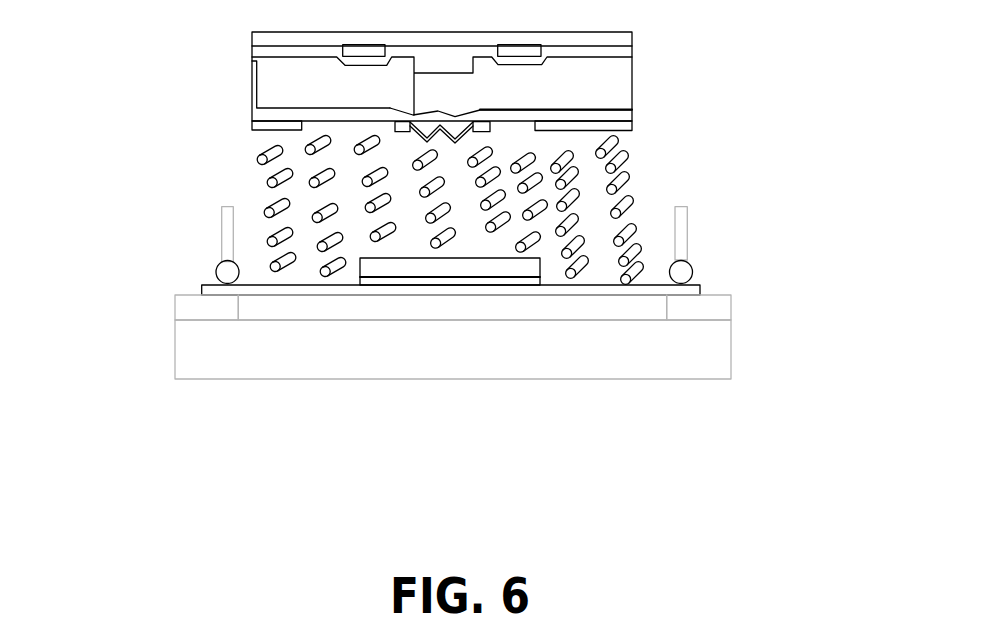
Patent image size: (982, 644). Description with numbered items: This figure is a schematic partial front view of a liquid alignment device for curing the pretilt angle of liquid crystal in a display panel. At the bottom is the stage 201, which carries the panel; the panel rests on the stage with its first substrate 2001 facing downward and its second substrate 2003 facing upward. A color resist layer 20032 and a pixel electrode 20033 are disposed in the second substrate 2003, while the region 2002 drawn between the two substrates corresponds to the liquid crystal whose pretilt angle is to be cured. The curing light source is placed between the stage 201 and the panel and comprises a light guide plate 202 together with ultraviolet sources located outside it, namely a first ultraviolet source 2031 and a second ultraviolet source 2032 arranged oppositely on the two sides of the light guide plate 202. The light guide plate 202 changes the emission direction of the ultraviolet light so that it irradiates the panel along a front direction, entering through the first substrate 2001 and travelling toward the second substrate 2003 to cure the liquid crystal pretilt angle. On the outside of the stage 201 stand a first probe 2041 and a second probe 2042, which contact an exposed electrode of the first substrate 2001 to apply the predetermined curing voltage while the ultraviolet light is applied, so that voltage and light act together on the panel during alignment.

The second substrate 2003 is at (603, 78).
The color resist layer 20032 is at (275, 83).
The pixel electrode 20033 is at (403, 127).
The thermal conductive particles 2002 is at (598, 193).
The first probe 2041 is at (223, 238).
The second probe 2042 is at (687, 238).
The first substrate 2001 is at (688, 292).
The first ultraviolet source 2031 is at (193, 310).
The second ultraviolet source 2032 is at (702, 310).
The light guide plate 202 is at (427, 308).
The stage 201 is at (492, 343).